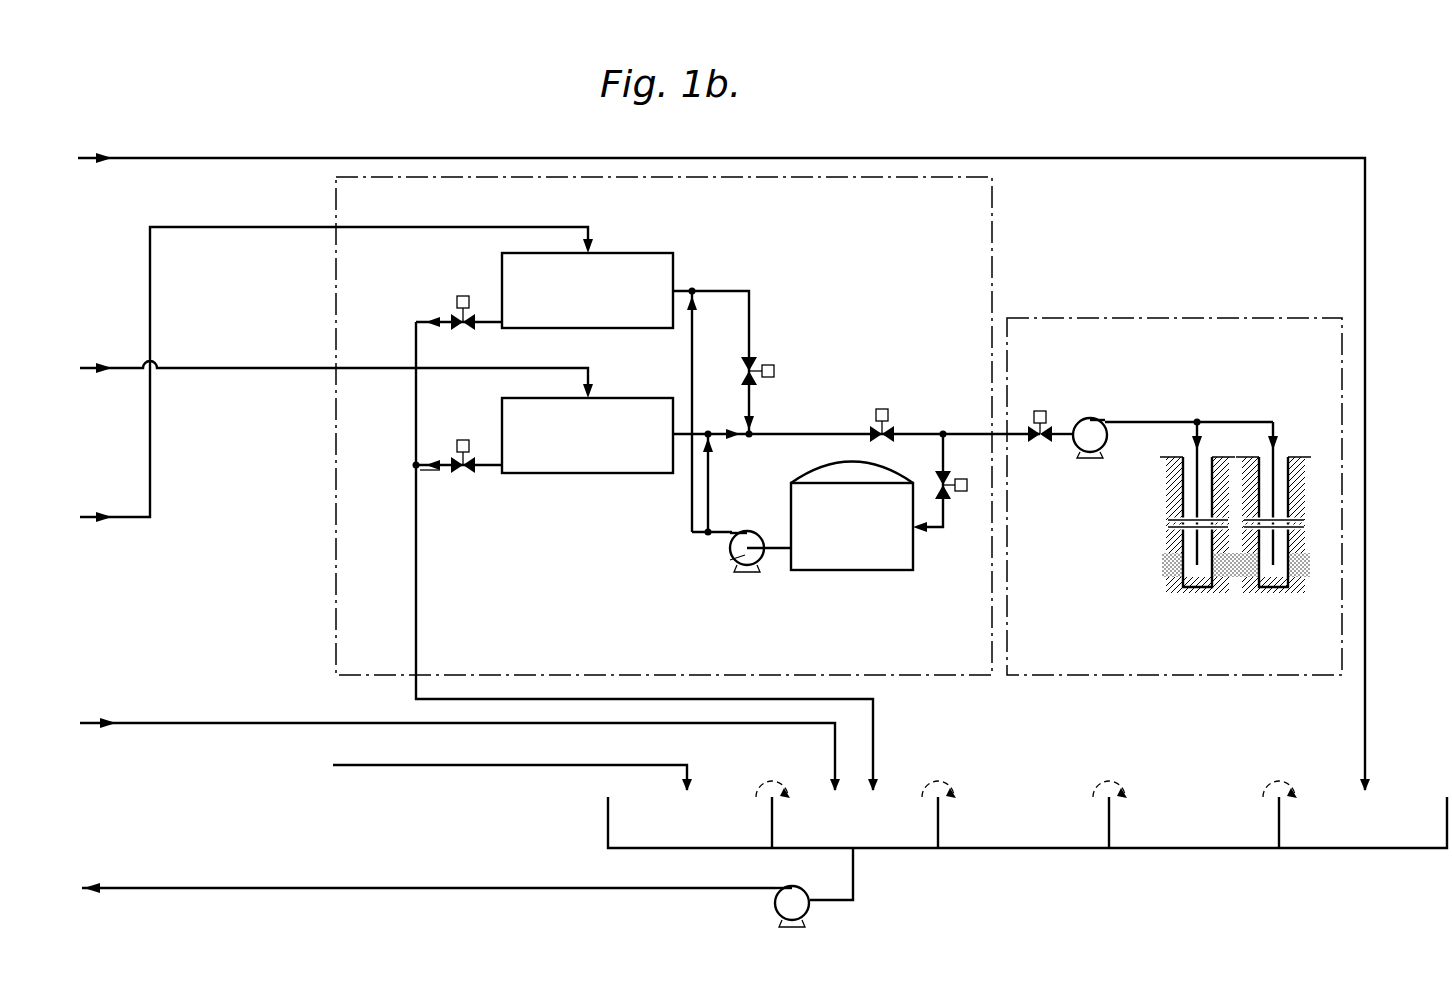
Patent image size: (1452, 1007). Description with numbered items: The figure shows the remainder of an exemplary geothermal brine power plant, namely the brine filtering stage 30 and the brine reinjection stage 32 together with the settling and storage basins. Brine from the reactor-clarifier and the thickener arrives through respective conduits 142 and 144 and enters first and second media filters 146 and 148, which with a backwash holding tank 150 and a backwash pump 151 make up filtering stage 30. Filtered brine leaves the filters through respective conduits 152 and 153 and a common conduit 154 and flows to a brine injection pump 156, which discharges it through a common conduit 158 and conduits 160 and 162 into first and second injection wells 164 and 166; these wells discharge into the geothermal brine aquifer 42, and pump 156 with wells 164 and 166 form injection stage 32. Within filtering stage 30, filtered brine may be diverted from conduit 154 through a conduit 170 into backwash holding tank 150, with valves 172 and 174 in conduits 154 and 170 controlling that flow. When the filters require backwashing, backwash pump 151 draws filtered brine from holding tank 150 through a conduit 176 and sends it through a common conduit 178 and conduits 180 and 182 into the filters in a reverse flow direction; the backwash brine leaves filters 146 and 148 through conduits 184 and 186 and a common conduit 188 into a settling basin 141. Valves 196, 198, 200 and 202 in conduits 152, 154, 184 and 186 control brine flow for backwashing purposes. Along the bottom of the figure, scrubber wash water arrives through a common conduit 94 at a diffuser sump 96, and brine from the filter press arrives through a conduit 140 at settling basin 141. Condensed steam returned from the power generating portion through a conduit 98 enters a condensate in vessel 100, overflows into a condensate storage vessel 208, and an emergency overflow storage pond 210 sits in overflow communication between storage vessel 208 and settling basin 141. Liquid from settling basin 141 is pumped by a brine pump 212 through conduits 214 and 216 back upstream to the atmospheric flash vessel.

The brine filtering stage 30 is at (992, 233).
The brine reinjection stage 32 is at (1149, 318).
The geothermal brine aquifer 42 is at (1160, 562).
The common conduit 94 is at (575, 767).
The diffuser sump 96 is at (608, 828).
The conduit 98 is at (171, 158).
The condensate in vessel 100 is at (1380, 848).
The conduit 140 is at (143, 725).
The settling basin 141 is at (825, 848).
The conduit 142 is at (130, 368).
The conduit 144 is at (130, 517).
The first media filter 146 is at (640, 253).
The second media filter 148 is at (640, 398).
The backwash holding tank 150 is at (880, 570).
The backwash pump 151 is at (728, 558).
The conduit 152 is at (749, 330).
The conduit 153 is at (726, 438).
The common conduit 154 is at (831, 434).
The brine injection pump 156 is at (1093, 418).
The common conduit 158 is at (1147, 422).
The conduit 160 is at (1199, 437).
The conduit 162 is at (1280, 422).
The first injection well 164 is at (1182, 457).
The second injection well 166 is at (1288, 457).
The conduit 170 is at (943, 455).
The valve 172 is at (1040, 411).
The valve 174 is at (966, 498).
The conduit 176 is at (771, 542).
The common conduit 178 is at (706, 536).
The conduit 180 is at (692, 350).
The conduit 182 is at (708, 492).
The conduit 184 is at (416, 343).
The conduit 186 is at (442, 470).
The common conduit 188 is at (417, 618).
The valve 196 is at (774, 371).
The valve 198 is at (879, 408).
The valve 200 is at (462, 300).
The valve 202 is at (462, 443).
The condensate storage vessel 208 is at (1203, 848).
The emergency overflow storage pond 210 is at (1003, 848).
The brine pump 212 is at (774, 902).
The conduit 214 is at (853, 880).
The conduit 216 is at (163, 888).